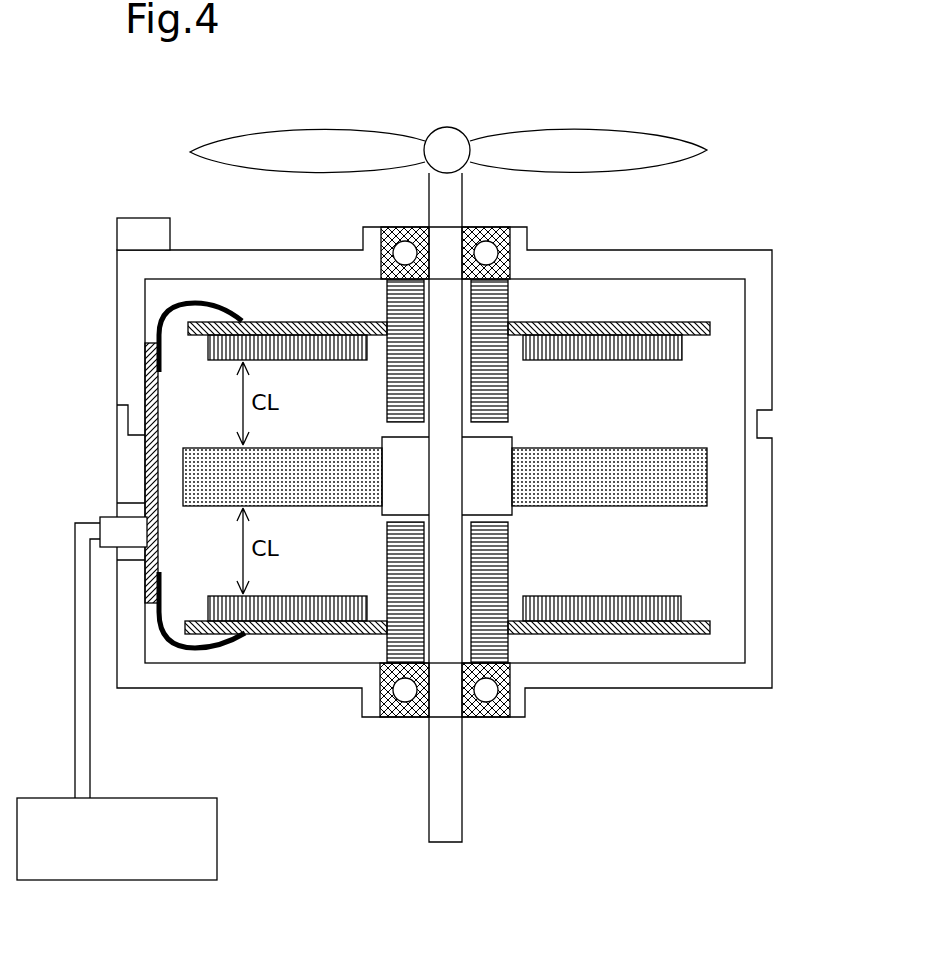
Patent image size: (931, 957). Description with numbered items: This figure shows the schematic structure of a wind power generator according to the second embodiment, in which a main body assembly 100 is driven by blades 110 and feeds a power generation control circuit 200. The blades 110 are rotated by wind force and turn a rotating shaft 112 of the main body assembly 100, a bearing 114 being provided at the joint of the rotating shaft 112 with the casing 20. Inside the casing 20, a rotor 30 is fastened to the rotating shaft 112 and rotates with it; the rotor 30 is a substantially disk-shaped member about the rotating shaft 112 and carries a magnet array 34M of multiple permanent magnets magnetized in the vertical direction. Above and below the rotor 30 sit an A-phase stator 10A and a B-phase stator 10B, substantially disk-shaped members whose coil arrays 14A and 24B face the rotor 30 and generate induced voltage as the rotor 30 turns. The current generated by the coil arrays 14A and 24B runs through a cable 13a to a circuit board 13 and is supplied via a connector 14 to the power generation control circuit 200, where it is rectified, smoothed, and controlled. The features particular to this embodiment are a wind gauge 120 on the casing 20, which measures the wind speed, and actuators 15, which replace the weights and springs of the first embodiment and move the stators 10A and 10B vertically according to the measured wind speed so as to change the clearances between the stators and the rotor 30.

The main body assembly 100 is at (774, 226).
The casing 20 is at (727, 270).
The blades 110 is at (702, 150).
The rotating shaft 112 is at (450, 757).
The bearing 114 is at (505, 228).
The wind gauge 120 is at (172, 232).
The actuators 15 is at (506, 311).
The A-phase stator 10A is at (711, 323).
The B-phase stator 10B is at (711, 598).
The coil array 14A is at (595, 361).
The coil array 24B is at (675, 597).
The rotor 30 is at (711, 450).
The magnet array 34M is at (668, 448).
The circuit board 13 is at (148, 348).
The cable 13a is at (215, 306).
The connector 14 is at (110, 522).
The power generation control circuit 200 is at (218, 844).